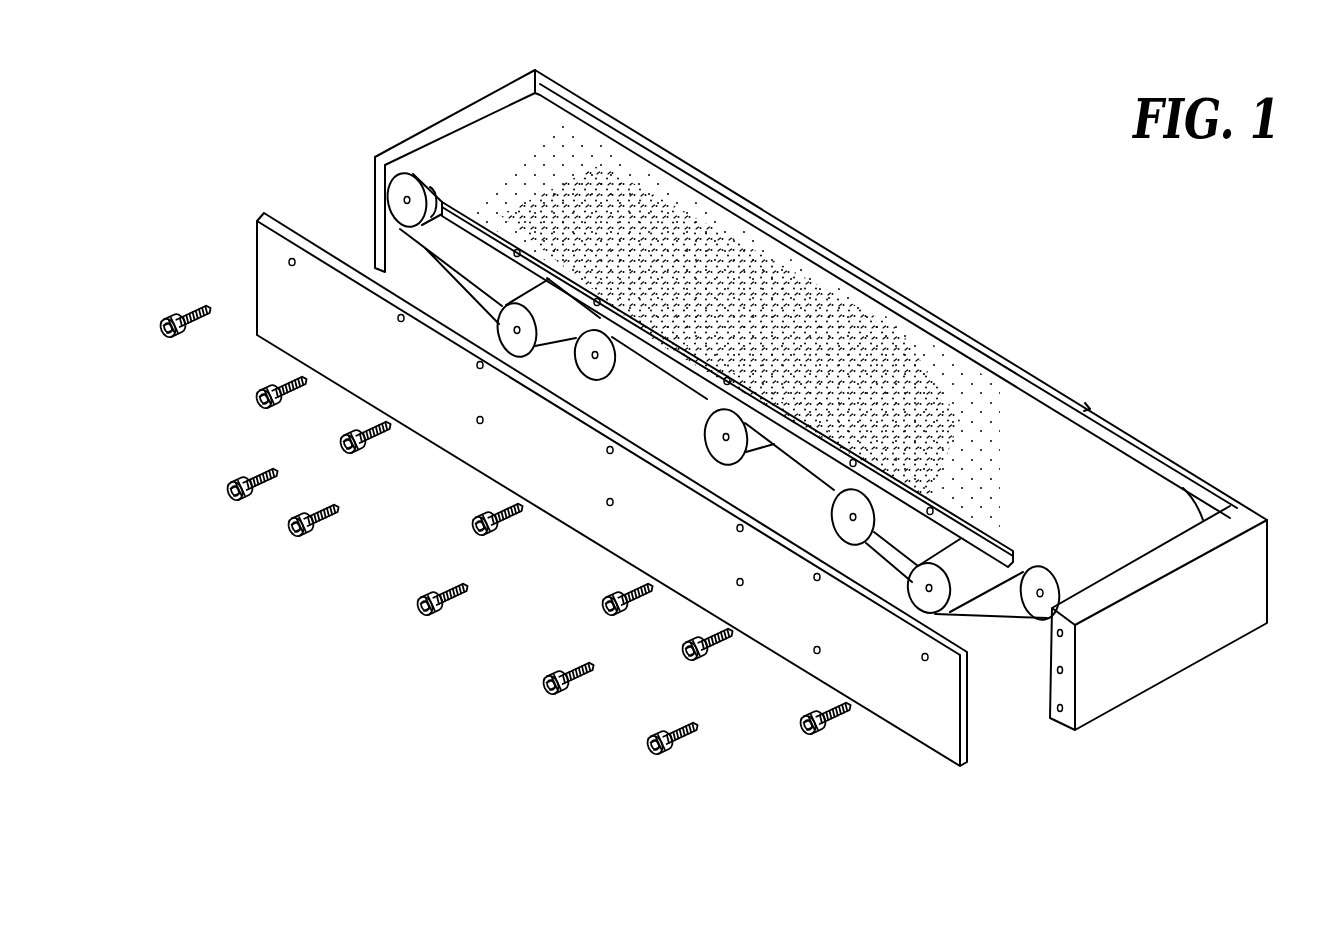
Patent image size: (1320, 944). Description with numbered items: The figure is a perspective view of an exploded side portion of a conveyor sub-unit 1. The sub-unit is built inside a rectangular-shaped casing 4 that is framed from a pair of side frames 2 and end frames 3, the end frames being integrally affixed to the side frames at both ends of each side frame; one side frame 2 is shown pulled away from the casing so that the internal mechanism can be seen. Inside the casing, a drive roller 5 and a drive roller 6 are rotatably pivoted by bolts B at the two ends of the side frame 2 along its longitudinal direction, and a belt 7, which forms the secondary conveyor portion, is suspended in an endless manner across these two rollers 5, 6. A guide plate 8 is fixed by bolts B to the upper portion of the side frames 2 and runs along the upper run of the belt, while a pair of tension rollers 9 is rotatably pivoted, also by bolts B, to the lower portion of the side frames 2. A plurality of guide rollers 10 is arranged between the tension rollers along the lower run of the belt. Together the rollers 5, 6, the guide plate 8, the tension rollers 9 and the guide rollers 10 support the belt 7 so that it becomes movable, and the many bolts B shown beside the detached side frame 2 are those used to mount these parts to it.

The conveyor sub-unit 1 is at (994, 144).
The side frame 2 is at (303, 310).
The end frame 3 is at (404, 134).
The casing 4 is at (881, 278).
The drive roller 5 is at (1033, 600).
The drive roller 6 is at (393, 199).
The belt 7 is at (762, 268).
The guide plate 8 is at (694, 370).
The tension roller 9 is at (548, 337).
The guide roller 10 is at (613, 367).
The bolt B is at (283, 532).